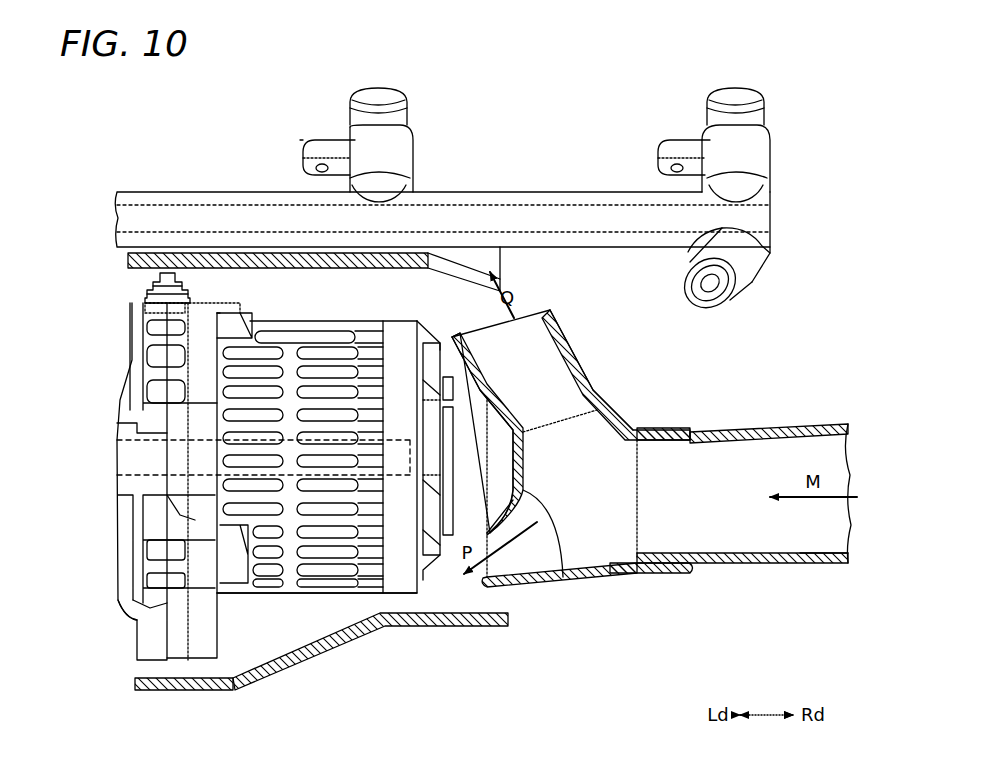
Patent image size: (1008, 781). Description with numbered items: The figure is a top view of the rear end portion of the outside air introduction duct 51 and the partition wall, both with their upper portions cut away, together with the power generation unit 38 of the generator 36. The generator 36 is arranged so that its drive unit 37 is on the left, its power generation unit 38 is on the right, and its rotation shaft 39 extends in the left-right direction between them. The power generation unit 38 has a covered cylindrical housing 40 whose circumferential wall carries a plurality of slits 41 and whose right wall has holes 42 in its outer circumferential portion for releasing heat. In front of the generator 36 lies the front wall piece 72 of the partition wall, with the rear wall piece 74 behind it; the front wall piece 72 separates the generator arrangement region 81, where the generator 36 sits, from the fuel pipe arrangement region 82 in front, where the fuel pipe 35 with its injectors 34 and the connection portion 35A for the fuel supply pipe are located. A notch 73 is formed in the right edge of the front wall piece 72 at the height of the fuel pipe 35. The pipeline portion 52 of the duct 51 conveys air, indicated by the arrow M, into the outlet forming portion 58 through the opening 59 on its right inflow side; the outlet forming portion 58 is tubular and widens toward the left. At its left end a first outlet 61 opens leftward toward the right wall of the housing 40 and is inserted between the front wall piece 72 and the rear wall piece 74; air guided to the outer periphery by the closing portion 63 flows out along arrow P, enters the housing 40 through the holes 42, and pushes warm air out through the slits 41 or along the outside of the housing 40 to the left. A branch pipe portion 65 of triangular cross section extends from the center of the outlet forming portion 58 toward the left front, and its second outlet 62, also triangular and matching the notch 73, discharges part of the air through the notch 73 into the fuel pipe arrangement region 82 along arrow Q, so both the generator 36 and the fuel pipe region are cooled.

The injector 34 is at (388, 112).
The fuel pipe 35 is at (170, 213).
The connection portion 35A is at (752, 265).
The generator 36 is at (118, 630).
The drive unit 37 is at (127, 665).
The power generation unit 38 is at (348, 594).
The rotation shaft 39 is at (200, 440).
The housing 40 is at (400, 575).
The slits 41 is at (318, 347).
The holes 42 is at (438, 375).
The outside air introduction duct 51 is at (826, 577).
The pipeline portion 52 is at (775, 565).
The outlet forming portion 58 is at (615, 578).
The opening 59 is at (690, 440).
The first outlet 61 is at (487, 590).
The second outlet 62 is at (548, 312).
The closing portion 63 is at (527, 533).
The branch pipe portion 65 is at (587, 357).
The front wall piece 72 is at (232, 257).
The notch 73 is at (463, 282).
The rear wall piece 74 is at (262, 690).
The generator arrangement region 81 is at (250, 299).
The fuel pipe arrangement region 82 is at (282, 153).